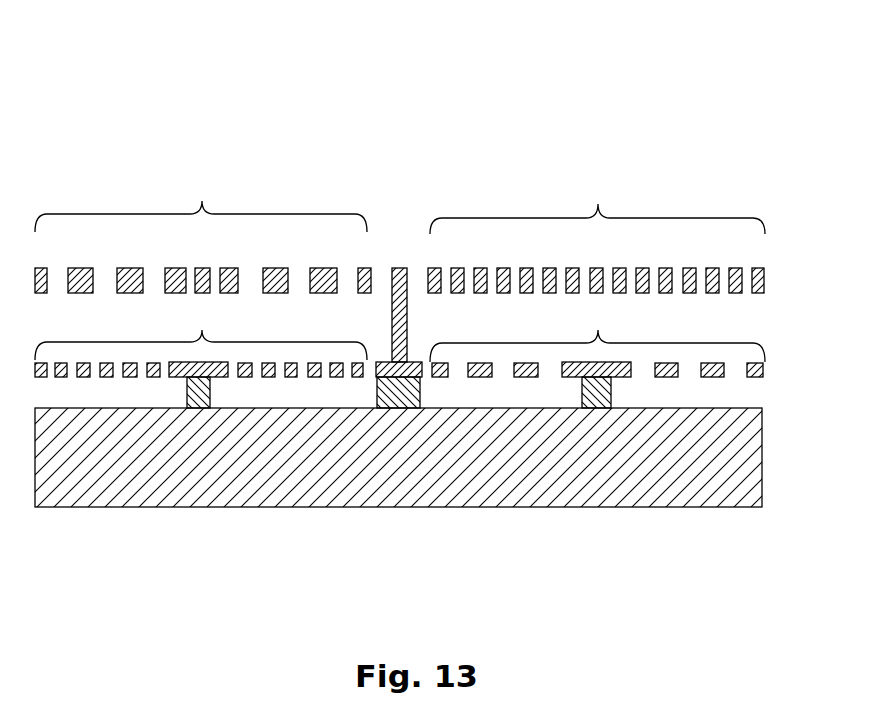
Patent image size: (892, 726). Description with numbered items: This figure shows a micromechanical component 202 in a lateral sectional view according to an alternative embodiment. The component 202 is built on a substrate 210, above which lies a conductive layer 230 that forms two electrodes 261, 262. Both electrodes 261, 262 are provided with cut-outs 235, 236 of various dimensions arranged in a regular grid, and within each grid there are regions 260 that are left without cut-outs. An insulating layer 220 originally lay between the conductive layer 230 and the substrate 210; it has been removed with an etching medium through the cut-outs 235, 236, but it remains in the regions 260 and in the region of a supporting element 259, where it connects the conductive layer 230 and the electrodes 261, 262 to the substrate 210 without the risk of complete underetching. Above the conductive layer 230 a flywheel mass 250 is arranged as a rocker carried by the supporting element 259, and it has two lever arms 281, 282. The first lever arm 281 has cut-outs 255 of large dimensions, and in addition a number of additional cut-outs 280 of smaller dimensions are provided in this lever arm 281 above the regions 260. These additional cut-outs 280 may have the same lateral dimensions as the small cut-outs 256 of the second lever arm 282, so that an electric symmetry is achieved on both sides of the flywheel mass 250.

The micromechanical component 202 is at (152, 118).
The substrate 210 is at (328, 480).
The insulating layer 220 is at (193, 387).
The conductive layer 230 is at (766, 373).
The cut-outs 235 is at (95, 367).
The cut-outs 236 is at (642, 368).
The flywheel mass 250 is at (764, 286).
The cut-outs 255 is at (106, 282).
The cut-outs 256 is at (678, 282).
The supporting element 259 is at (401, 282).
The regions 260 is at (220, 373).
The electrode 261 is at (201, 327).
The electrode 262 is at (597, 328).
The additional cut-outs 280 is at (215, 278).
The lever arm 281 is at (201, 197).
The lever arm 282 is at (597, 200).